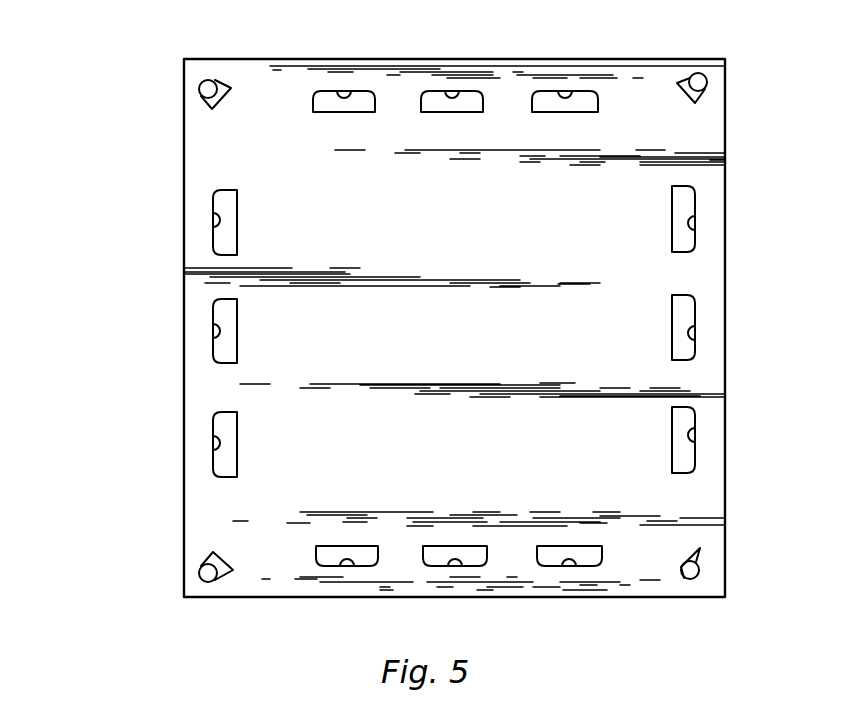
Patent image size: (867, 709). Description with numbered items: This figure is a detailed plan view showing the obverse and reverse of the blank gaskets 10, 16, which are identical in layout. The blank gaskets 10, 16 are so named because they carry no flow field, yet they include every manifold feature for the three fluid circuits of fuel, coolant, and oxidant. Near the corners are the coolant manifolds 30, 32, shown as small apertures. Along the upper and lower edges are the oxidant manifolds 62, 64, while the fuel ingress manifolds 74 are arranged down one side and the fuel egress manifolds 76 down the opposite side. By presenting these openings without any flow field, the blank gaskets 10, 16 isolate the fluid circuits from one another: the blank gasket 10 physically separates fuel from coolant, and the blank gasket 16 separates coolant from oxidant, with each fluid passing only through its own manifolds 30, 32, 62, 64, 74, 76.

The blank gasket 10 is at (147, 270).
The blank gasket 16 is at (364, 328).
The coolant manifold 30 is at (202, 93).
The coolant manifold 32 is at (201, 564).
The oxidant manifold 62 is at (345, 99).
The oxidant manifold 64 is at (347, 560).
The fuel ingress manifold 74 is at (218, 213).
The fuel egress manifold 76 is at (683, 229).